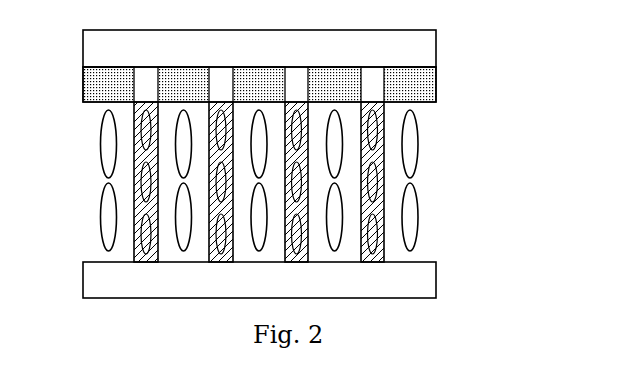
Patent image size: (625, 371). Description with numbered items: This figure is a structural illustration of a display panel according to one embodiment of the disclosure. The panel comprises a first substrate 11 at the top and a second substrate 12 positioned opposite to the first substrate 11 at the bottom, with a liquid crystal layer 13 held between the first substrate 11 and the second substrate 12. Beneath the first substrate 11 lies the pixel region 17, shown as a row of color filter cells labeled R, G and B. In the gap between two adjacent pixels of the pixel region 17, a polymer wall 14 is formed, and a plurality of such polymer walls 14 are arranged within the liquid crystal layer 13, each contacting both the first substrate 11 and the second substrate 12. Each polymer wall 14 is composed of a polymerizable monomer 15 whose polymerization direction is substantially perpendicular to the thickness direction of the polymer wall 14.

The first substrate 11 is at (436, 50).
The second substrate 12 is at (436, 282).
The liquid crystal layer 13 is at (422, 181).
The polymer wall 14 is at (135, 177).
The polymerizable monomer 15 is at (152, 255).
The pixel region 17 is at (436, 92).